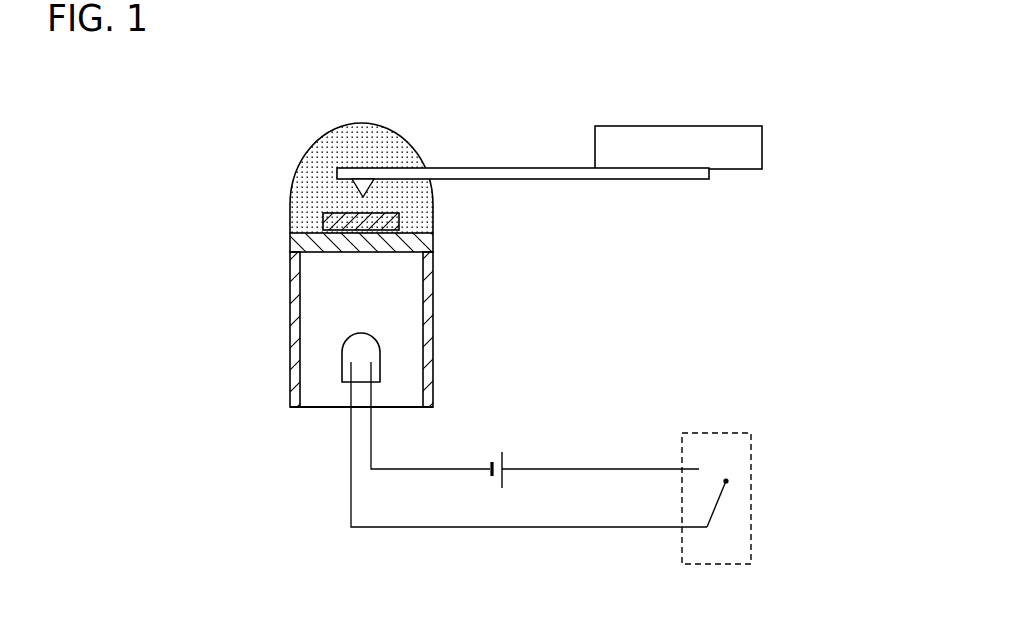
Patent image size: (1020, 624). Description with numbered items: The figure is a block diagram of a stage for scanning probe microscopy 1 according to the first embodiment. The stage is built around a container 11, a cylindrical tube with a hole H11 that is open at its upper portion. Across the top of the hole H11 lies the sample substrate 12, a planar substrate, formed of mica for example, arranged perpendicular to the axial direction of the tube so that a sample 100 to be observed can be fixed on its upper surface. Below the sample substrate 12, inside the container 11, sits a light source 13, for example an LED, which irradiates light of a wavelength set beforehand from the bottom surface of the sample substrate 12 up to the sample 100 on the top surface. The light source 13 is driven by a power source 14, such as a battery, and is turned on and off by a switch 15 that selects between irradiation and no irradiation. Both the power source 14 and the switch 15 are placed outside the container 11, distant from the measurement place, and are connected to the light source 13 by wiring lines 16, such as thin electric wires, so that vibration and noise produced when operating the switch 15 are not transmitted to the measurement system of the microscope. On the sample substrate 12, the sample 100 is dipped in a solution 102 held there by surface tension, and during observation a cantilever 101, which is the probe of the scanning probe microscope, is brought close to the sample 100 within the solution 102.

The stage for scanning probe microscopy 1 is at (377, 355).
The container 11 is at (290, 322).
The hole H11 is at (300, 382).
The sample substrate 12 is at (433, 240).
The light source 13 is at (427, 357).
The power source 14 is at (504, 462).
The switch 15 is at (752, 483).
The wiring lines 16 is at (437, 457).
The sample 100 is at (323, 222).
The cantilever 101 is at (365, 167).
The solution 102 is at (378, 140).